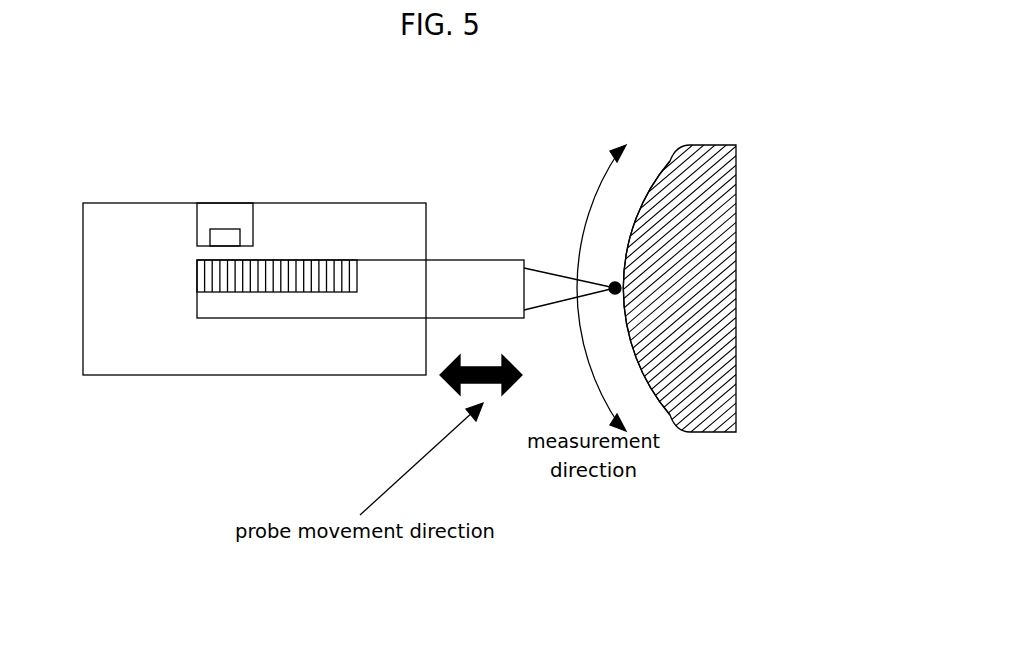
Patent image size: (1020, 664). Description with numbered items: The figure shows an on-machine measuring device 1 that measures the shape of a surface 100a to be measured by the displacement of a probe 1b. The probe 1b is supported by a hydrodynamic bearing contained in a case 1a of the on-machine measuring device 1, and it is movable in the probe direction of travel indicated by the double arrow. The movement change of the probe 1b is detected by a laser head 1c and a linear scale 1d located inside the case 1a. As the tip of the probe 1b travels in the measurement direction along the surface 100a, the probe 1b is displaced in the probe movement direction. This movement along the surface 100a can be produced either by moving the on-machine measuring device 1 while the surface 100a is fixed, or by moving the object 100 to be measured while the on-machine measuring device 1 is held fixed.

The on-machine measuring device 1 is at (265, 100).
The case 1a is at (140, 203).
The probe 1b is at (475, 260).
The laser head 1c is at (223, 229).
The linear scale 1d is at (310, 260).
The object to be measured 100 is at (722, 298).
The surface to be measured 100a is at (640, 357).